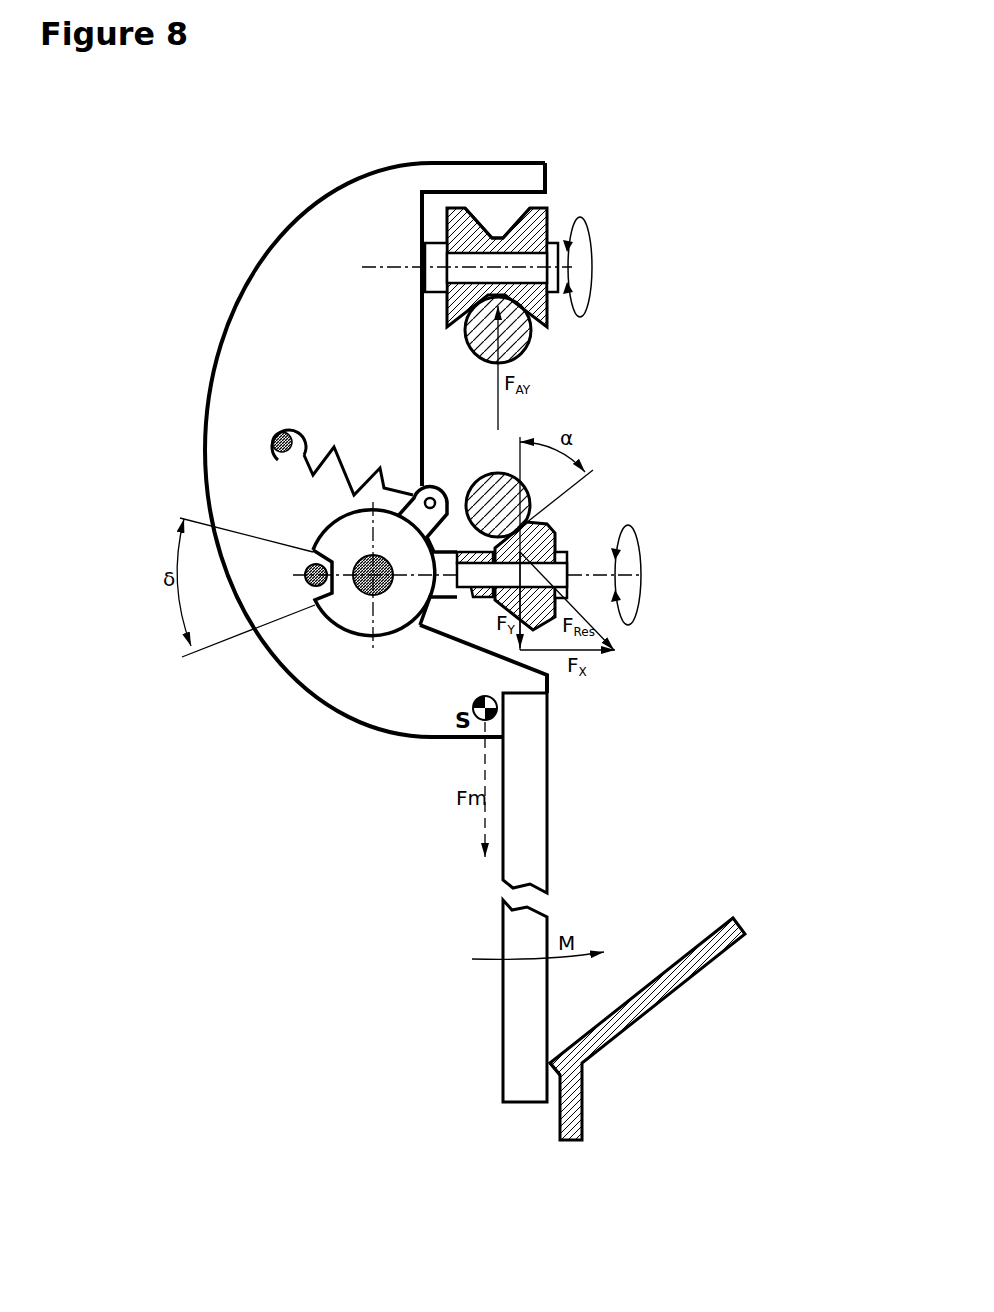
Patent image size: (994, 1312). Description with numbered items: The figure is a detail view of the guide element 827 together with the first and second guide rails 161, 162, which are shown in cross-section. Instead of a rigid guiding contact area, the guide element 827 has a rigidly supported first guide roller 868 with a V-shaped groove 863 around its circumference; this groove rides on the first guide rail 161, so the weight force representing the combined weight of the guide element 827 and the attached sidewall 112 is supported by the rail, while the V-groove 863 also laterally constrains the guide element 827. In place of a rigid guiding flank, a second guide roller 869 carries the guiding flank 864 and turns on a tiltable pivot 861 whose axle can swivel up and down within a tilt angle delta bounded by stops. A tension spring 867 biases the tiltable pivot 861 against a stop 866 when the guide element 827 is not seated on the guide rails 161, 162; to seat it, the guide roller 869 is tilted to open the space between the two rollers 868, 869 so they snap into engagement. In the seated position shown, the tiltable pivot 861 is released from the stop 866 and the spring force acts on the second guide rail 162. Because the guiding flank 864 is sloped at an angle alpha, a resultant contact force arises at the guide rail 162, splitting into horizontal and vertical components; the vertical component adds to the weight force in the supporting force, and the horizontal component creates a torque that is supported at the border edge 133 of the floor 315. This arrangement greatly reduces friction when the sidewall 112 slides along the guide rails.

The guide element 827 is at (333, 317).
The first guide roller 868 is at (547, 207).
The V-shaped groove 863 is at (493, 224).
The first guide rail 161 is at (512, 340).
The second guide rail 162 is at (495, 497).
The tiltable pivot 861 is at (355, 622).
The second guide roller 869 is at (553, 533).
The tension spring 867 is at (405, 505).
The stop 866 is at (310, 570).
The guiding flank 864 is at (490, 612).
The sidewall 112 is at (530, 817).
The floor 315 is at (670, 997).
The border edge 133 is at (551, 1072).